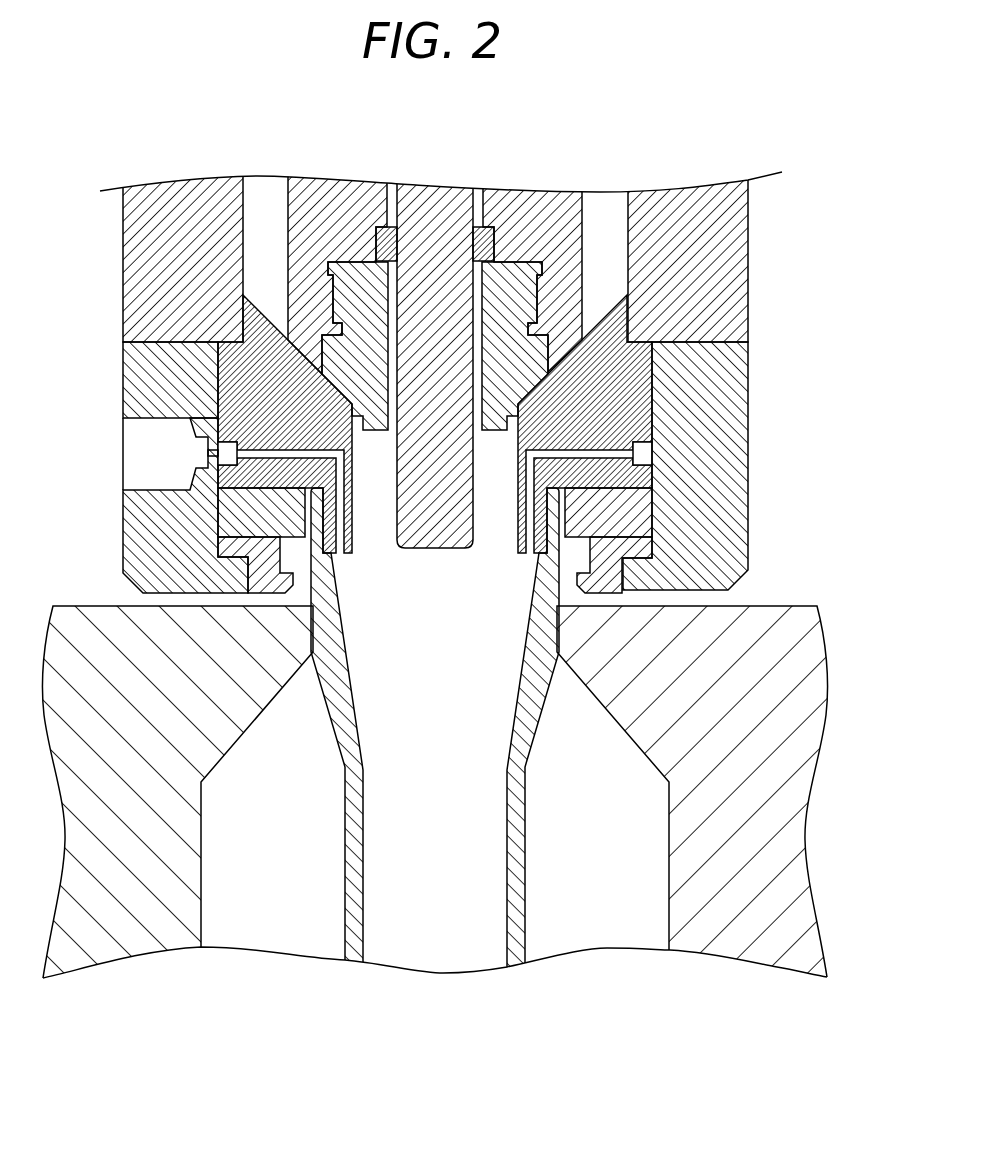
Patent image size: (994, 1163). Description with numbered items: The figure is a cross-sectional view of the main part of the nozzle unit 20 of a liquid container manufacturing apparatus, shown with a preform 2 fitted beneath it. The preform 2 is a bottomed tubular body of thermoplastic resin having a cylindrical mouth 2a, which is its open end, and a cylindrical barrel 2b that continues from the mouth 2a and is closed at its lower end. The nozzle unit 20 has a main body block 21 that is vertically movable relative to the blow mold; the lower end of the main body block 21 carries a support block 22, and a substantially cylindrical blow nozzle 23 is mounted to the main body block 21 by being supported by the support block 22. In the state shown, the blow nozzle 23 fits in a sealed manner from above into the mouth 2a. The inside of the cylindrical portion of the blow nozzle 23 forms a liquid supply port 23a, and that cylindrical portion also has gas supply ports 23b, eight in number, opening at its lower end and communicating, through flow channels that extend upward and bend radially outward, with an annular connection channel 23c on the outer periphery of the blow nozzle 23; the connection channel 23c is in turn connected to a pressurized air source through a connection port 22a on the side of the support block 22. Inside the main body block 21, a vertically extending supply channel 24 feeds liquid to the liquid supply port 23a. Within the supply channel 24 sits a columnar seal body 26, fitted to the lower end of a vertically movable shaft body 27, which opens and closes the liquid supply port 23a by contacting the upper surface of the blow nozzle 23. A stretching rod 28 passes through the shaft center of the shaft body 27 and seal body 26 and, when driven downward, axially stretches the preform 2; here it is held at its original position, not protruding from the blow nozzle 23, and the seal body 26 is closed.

The preform 2 is at (562, 572).
The mouth 2a is at (560, 528).
The barrel 2b is at (540, 675).
The nozzle unit 20 is at (751, 276).
The main body block 21 is at (725, 323).
The support block 22 is at (148, 380).
The connection port 22a is at (145, 455).
The blow nozzle 23 is at (603, 314).
The liquid supply port 23a is at (497, 530).
The gas supply port 23b is at (337, 555).
The connection channel 23c is at (653, 452).
The supply channel 24 is at (265, 198).
The seal body 26 is at (517, 267).
The shaft body 27 is at (305, 268).
The stretching rod 28 is at (420, 549).